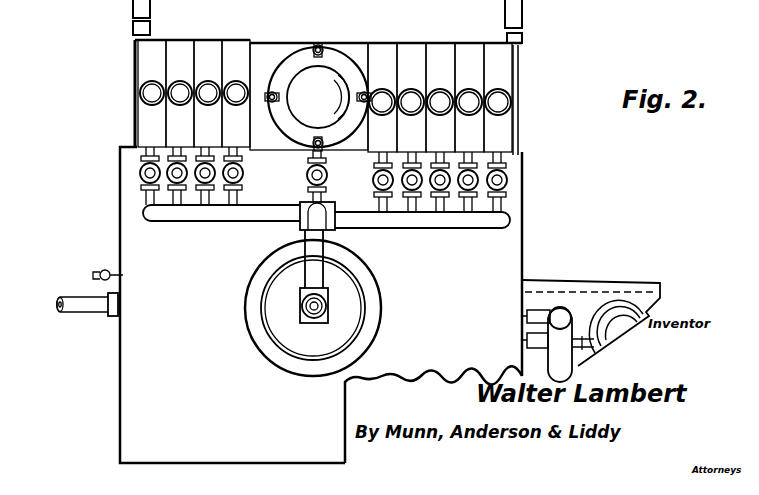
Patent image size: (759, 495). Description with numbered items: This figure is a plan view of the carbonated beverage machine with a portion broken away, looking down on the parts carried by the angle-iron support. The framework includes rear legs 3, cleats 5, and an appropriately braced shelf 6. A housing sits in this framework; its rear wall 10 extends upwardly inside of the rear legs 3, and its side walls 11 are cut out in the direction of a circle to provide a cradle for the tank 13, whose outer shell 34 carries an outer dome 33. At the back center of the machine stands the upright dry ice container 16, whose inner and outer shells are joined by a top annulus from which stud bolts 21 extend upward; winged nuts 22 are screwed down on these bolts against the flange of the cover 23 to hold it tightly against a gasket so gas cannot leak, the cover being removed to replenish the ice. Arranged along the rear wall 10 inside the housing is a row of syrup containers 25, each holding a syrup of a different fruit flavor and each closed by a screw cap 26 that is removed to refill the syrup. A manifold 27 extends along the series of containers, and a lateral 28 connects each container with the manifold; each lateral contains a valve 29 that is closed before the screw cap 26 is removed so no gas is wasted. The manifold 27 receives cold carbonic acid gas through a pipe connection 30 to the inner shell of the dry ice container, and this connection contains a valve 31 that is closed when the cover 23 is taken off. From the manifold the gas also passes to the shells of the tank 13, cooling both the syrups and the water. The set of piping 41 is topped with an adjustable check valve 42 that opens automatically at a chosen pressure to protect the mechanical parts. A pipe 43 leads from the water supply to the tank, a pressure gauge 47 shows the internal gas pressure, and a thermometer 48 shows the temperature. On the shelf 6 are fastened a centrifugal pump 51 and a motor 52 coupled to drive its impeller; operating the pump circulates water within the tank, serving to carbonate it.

The rear legs 3 is at (133, 29).
The cleats 5 is at (421, 21).
The side walls 11 is at (135, 63).
The rear wall 10 is at (158, 36).
The syrup containers 25 is at (178, 60).
The screw cap 26 is at (176, 88).
The dry ice container 16 is at (296, 52).
The stud bolts 21 is at (323, 50).
The winged nuts 22 is at (349, 64).
The cover 23 is at (343, 63).
The tank 13 is at (110, 341).
The outer shell 34 is at (128, 366).
The lateral 28 is at (141, 152).
The valve 29 is at (143, 169).
The manifold 27 is at (143, 210).
The pipe connection 30 is at (330, 183).
The valve 31 is at (328, 162).
The set of piping 41 is at (317, 248).
The outer dome 33 is at (363, 322).
The check valve 42 is at (330, 302).
The thermometer 48 is at (106, 274).
The pipe 43 is at (93, 297).
The shelf 6 is at (597, 290).
The pressure gauge 47 is at (542, 312).
The centrifugal pump 51 is at (558, 340).
The motor 52 is at (618, 322).